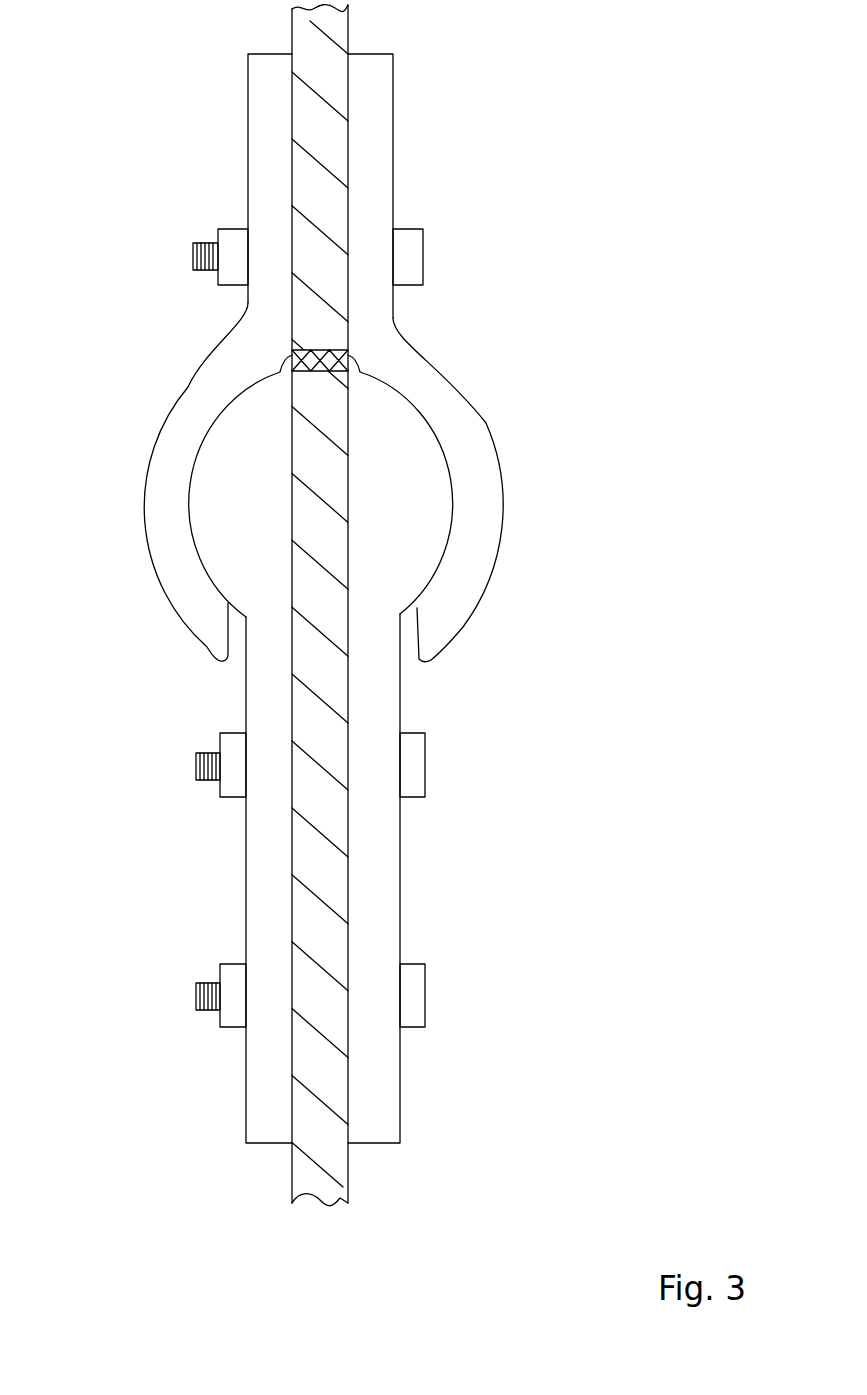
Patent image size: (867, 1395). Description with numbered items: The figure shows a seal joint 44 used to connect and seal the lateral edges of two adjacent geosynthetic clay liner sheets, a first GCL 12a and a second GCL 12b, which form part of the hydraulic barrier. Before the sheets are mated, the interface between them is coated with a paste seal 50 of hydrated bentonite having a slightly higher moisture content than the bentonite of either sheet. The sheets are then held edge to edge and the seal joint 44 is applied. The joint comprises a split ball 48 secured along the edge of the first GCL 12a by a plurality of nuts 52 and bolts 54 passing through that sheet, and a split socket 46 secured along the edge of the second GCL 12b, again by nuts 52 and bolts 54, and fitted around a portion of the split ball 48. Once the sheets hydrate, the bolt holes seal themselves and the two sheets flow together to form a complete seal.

The first GCL 12a is at (342, 1172).
The second GCL 12b is at (343, 42).
The seal joint 44 is at (145, 167).
The split socket 46 is at (473, 432).
The split ball 48 is at (423, 540).
The paste seal 50 is at (333, 349).
The nuts 52 is at (232, 797).
The bolts 54 is at (415, 787).